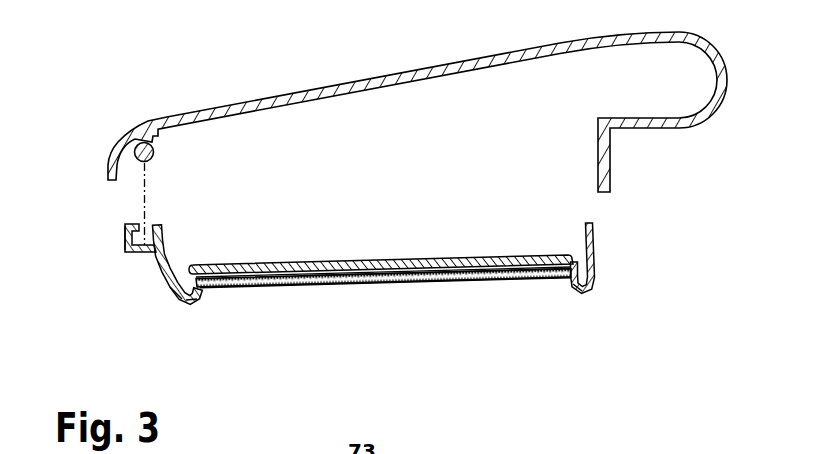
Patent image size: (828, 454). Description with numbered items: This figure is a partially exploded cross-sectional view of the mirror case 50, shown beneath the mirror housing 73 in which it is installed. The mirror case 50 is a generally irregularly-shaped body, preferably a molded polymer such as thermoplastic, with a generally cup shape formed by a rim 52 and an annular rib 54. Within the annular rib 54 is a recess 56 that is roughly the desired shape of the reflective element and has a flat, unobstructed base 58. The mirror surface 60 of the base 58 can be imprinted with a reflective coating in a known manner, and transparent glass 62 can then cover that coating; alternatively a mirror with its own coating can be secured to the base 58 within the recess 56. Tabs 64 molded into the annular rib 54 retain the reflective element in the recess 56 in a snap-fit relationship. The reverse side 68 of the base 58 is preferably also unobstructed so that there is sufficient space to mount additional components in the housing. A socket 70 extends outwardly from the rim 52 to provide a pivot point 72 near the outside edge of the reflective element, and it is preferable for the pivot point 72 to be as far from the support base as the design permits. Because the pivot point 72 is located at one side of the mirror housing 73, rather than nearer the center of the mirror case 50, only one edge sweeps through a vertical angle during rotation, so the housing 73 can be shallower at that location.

The mirror case 50 is at (381, 258).
The rim 52 is at (165, 223).
The annular rib 54 is at (173, 291).
The recess 56 is at (257, 284).
The base 58 is at (338, 262).
The mirror surface 60 is at (480, 281).
The transparent glass 62 is at (360, 285).
The tabs 64 is at (199, 302).
The reverse side 68 is at (283, 262).
The socket 70 is at (122, 251).
The pivot point 72 is at (137, 143).
The mirror housing 73 is at (273, 95).